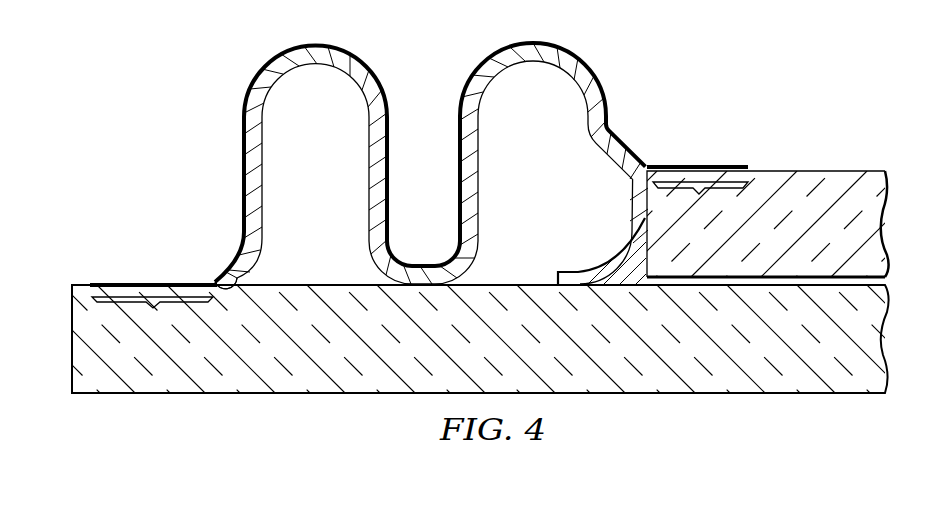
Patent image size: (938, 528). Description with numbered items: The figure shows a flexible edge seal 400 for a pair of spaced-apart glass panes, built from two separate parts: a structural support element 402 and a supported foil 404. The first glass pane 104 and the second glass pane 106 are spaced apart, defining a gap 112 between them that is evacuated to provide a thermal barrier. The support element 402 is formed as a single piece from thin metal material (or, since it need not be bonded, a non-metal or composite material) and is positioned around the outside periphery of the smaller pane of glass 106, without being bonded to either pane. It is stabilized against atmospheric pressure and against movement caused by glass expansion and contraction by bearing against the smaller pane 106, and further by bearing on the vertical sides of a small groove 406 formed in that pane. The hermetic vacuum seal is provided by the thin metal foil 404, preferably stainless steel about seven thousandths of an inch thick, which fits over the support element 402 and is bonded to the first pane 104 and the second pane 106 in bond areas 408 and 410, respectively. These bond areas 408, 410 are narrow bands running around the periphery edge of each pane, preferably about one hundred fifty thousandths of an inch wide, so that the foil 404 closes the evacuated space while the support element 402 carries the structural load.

The flexible edge seal 400 is at (441, 166).
The structural support element 402 is at (478, 146).
The foil 404 is at (460, 130).
The groove 406 is at (217, 270).
The bond area 408 is at (697, 196).
The bond area 410 is at (153, 311).
The first glass pane 104 is at (806, 180).
The second glass pane 106 is at (726, 382).
The gap 112 is at (634, 268).